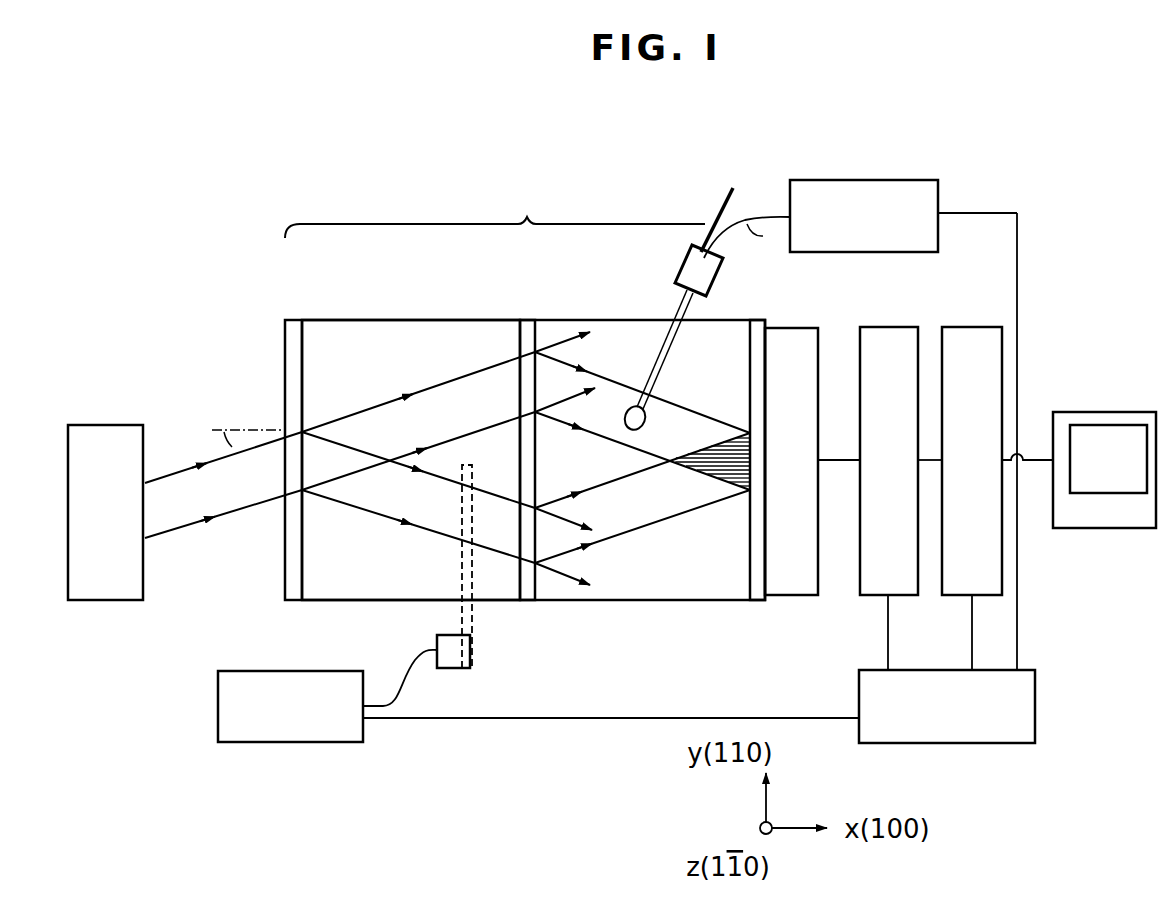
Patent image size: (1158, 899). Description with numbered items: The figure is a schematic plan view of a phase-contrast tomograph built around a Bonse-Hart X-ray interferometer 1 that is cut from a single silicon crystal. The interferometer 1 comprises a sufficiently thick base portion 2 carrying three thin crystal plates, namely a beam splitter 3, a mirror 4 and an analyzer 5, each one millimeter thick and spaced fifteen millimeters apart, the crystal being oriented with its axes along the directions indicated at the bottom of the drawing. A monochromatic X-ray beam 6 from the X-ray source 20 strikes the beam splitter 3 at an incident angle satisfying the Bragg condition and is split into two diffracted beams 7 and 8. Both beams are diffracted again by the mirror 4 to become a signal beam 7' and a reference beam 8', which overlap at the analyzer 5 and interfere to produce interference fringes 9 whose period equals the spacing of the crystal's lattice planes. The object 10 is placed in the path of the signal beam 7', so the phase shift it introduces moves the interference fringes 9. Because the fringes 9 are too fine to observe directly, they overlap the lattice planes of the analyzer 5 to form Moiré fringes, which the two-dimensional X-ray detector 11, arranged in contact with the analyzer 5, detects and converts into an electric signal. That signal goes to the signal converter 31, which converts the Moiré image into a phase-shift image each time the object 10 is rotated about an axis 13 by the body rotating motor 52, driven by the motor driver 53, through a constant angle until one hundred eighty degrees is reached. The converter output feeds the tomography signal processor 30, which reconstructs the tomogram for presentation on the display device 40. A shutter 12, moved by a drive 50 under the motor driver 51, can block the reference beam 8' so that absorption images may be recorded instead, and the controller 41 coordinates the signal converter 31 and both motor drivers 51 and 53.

The Bonse-Hart X-ray interferometer 1 is at (525, 389).
The base portion 2 is at (395, 320).
The beam splitter 3 is at (294, 320).
The mirror 4 is at (528, 320).
The analyzer 5 is at (758, 320).
The incident X-ray beam 6 is at (223, 484).
The diffracted beam 7 is at (418, 421).
The diffracted beam 8 is at (418, 497).
The signal beam 7' is at (642, 411).
The reference beam 8' is at (642, 509).
The interference fringes 9 is at (740, 432).
The object 10 is at (630, 408).
The two-dimensional X-ray detector 11 is at (819, 328).
The shutter 12 is at (473, 628).
The axis 13 is at (736, 198).
The X-ray source 20 is at (101, 425).
The tomography signal processor 30 is at (969, 327).
The signal converter 31 is at (894, 327).
The display device 40 is at (1105, 412).
The controller 41 is at (1035, 714).
The phase shifter drive motor 50 is at (437, 644).
The motor driver 51 is at (218, 716).
The body rotating motor 52 is at (700, 250).
The motor driver 53 is at (818, 180).